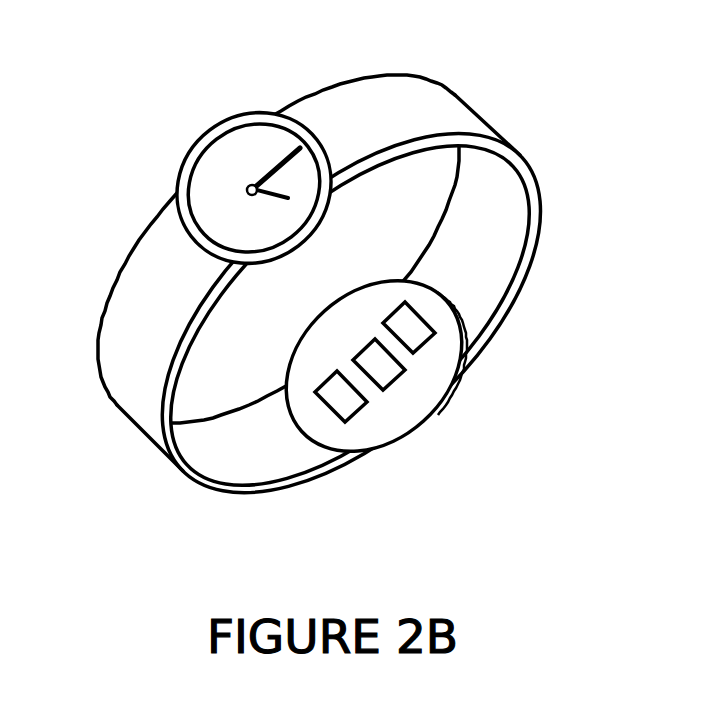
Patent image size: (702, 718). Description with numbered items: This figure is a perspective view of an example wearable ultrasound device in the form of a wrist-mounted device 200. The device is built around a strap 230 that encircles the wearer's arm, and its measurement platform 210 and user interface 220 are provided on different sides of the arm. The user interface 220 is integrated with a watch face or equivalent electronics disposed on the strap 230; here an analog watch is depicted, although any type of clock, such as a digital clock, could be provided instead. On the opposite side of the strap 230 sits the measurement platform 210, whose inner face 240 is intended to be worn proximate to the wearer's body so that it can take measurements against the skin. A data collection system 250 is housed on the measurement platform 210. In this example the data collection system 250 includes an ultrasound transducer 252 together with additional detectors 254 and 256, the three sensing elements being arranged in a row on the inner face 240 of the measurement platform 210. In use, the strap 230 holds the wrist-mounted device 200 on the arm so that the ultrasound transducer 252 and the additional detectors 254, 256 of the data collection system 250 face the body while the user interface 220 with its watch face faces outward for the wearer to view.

The wrist-mounted device 200 is at (324, 288).
The measurement platform 210 is at (355, 455).
The user interface 220 is at (203, 135).
The strap 230 is at (116, 315).
The inner face 240 is at (307, 423).
The data collection system 250 is at (394, 382).
The ultrasound transducer 252 is at (398, 382).
The additional detector 254 is at (357, 410).
The additional detector 256 is at (420, 350).